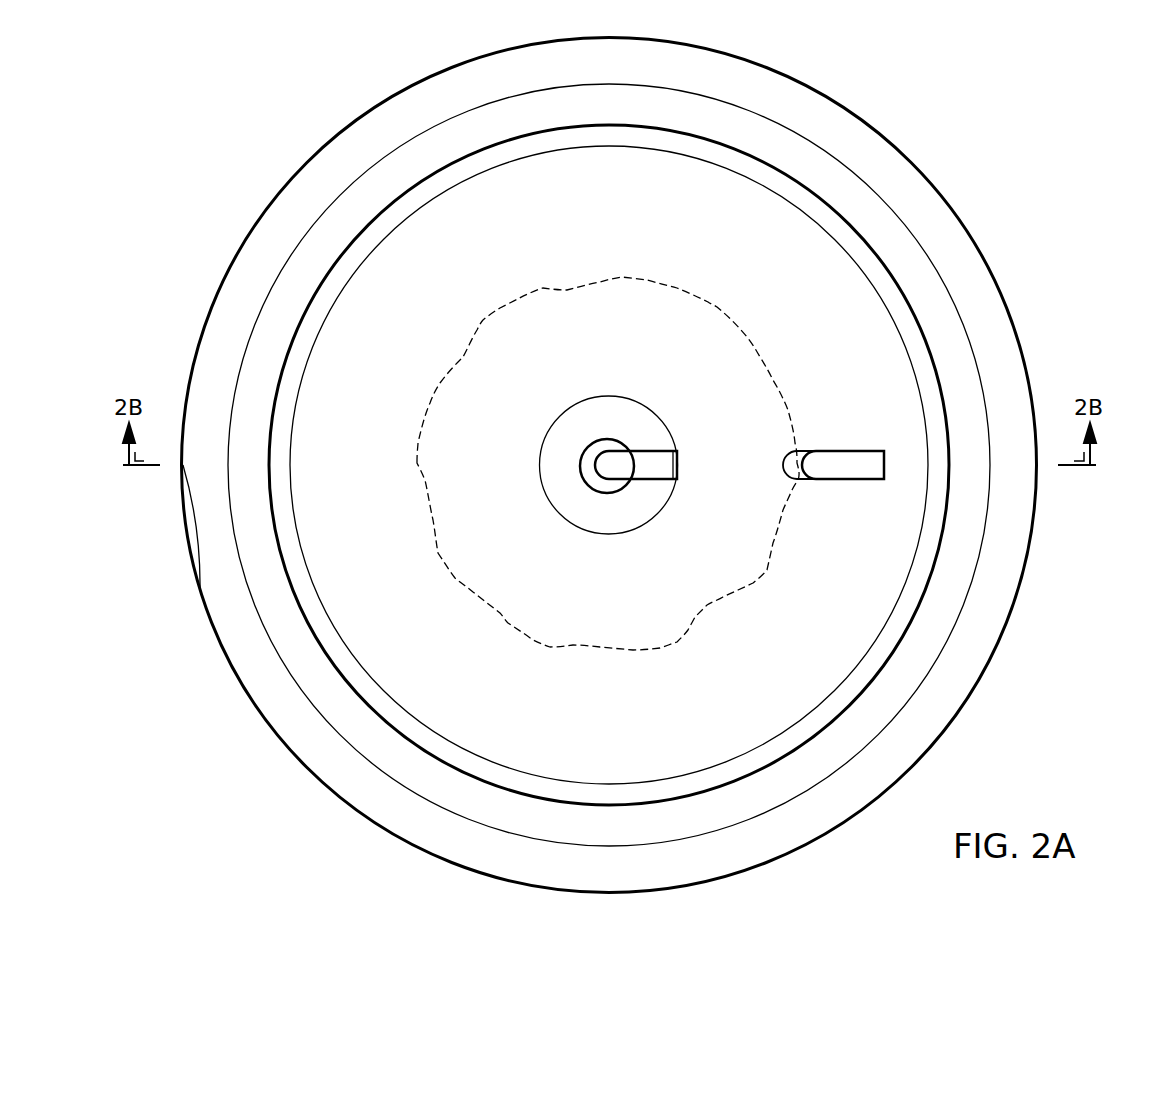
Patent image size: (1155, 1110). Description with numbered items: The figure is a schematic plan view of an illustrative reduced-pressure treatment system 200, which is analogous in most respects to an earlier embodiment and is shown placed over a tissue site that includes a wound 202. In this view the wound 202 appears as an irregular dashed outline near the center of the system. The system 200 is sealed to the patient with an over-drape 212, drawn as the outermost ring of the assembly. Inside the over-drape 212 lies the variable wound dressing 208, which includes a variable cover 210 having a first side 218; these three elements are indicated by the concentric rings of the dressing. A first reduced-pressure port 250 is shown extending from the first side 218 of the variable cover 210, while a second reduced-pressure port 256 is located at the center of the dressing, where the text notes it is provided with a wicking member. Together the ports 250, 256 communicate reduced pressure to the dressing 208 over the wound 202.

The reduced-pressure treatment system 200 is at (970, 136).
The wound 202 is at (533, 270).
The variable wound dressing 208 is at (571, 172).
The variable cover 210 is at (608, 171).
The over-drape 212 is at (216, 578).
The first side 218 is at (647, 172).
The first reduced-pressure port 250 is at (842, 451).
The second reduced-pressure port 256 is at (658, 450).